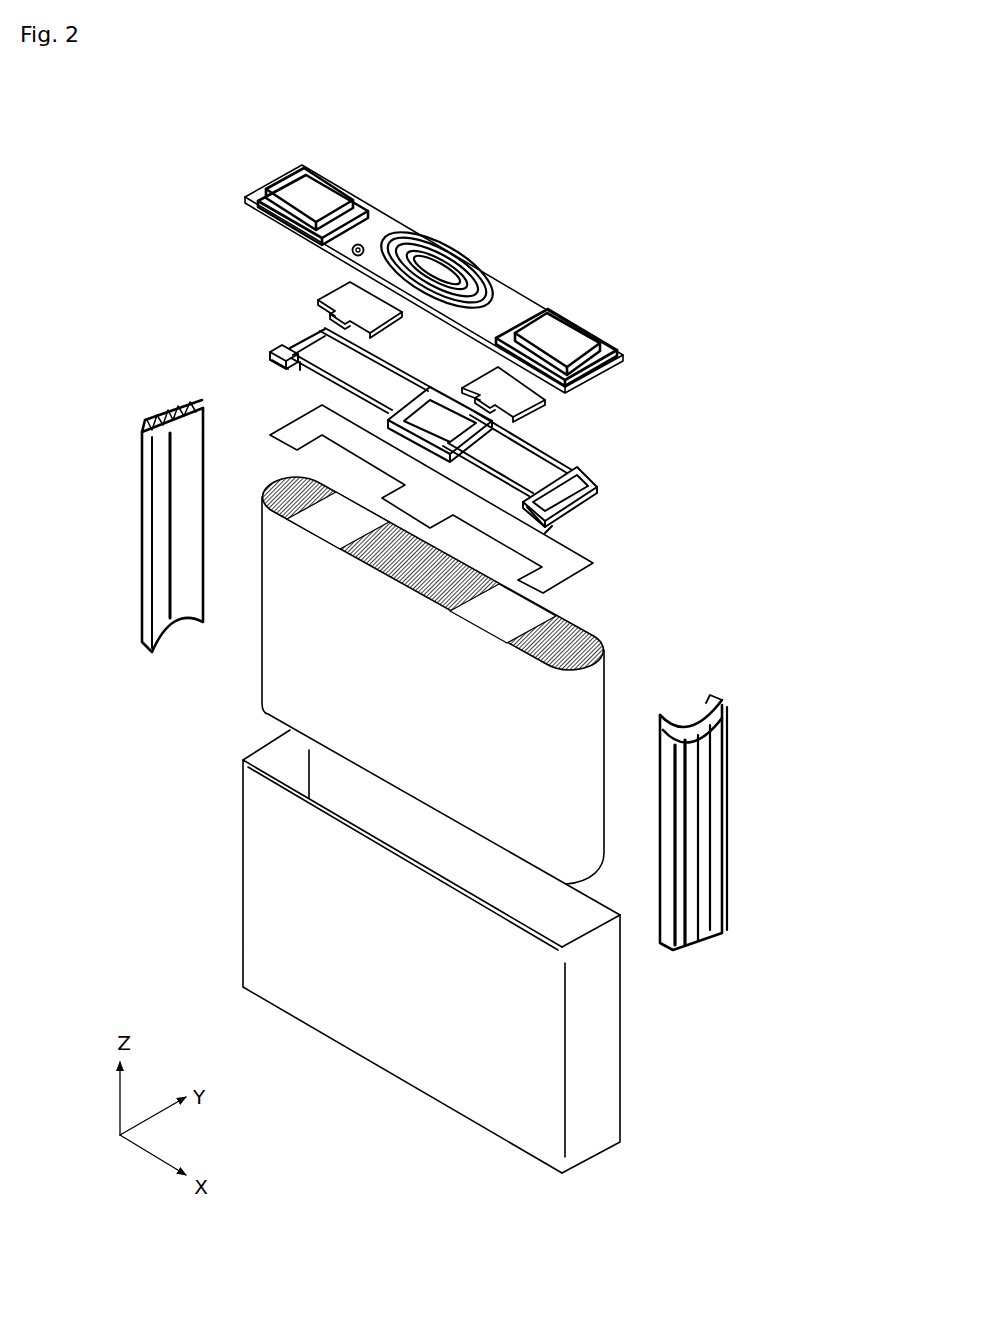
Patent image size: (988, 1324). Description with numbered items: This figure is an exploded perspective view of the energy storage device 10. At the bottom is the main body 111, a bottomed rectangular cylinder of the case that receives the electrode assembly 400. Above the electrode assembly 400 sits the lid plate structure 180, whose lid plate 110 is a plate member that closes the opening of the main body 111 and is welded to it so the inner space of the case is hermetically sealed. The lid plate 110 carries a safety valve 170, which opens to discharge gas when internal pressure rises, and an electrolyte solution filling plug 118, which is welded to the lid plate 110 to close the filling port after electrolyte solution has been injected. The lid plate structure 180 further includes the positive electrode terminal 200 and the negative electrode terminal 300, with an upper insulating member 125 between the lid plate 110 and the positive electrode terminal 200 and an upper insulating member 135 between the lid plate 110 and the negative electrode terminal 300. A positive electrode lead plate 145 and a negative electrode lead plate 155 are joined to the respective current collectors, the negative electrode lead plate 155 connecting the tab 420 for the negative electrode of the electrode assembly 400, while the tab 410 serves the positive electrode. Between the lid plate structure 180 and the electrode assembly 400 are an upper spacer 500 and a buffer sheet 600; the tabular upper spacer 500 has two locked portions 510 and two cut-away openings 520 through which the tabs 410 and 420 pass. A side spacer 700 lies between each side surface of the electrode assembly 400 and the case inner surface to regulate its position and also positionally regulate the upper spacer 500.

The energy storage device 10 is at (666, 157).
The lid plate 110 is at (628, 341).
The main body 111 is at (240, 860).
The electrolyte solution filling plug 118 is at (364, 247).
The upper insulating member 125 is at (358, 214).
The upper insulating member 135 is at (543, 306).
The positive electrode lead plate 145 is at (340, 300).
The negative electrode lead plate 155 is at (548, 412).
The safety valve 170 is at (432, 272).
The lid plate structure 180 is at (624, 376).
The positive electrode terminal 200 is at (318, 192).
The negative electrode terminal 300 is at (568, 338).
The electrode assembly 400 is at (468, 657).
The tab for the positive electrode 410 is at (355, 500).
The tab for the negative electrode 420 is at (527, 597).
The upper spacer 500 is at (467, 413).
The locked portion 510 is at (330, 318).
The opening 520 is at (323, 382).
The buffer sheet 600 is at (563, 558).
The side spacer 700 is at (140, 455).